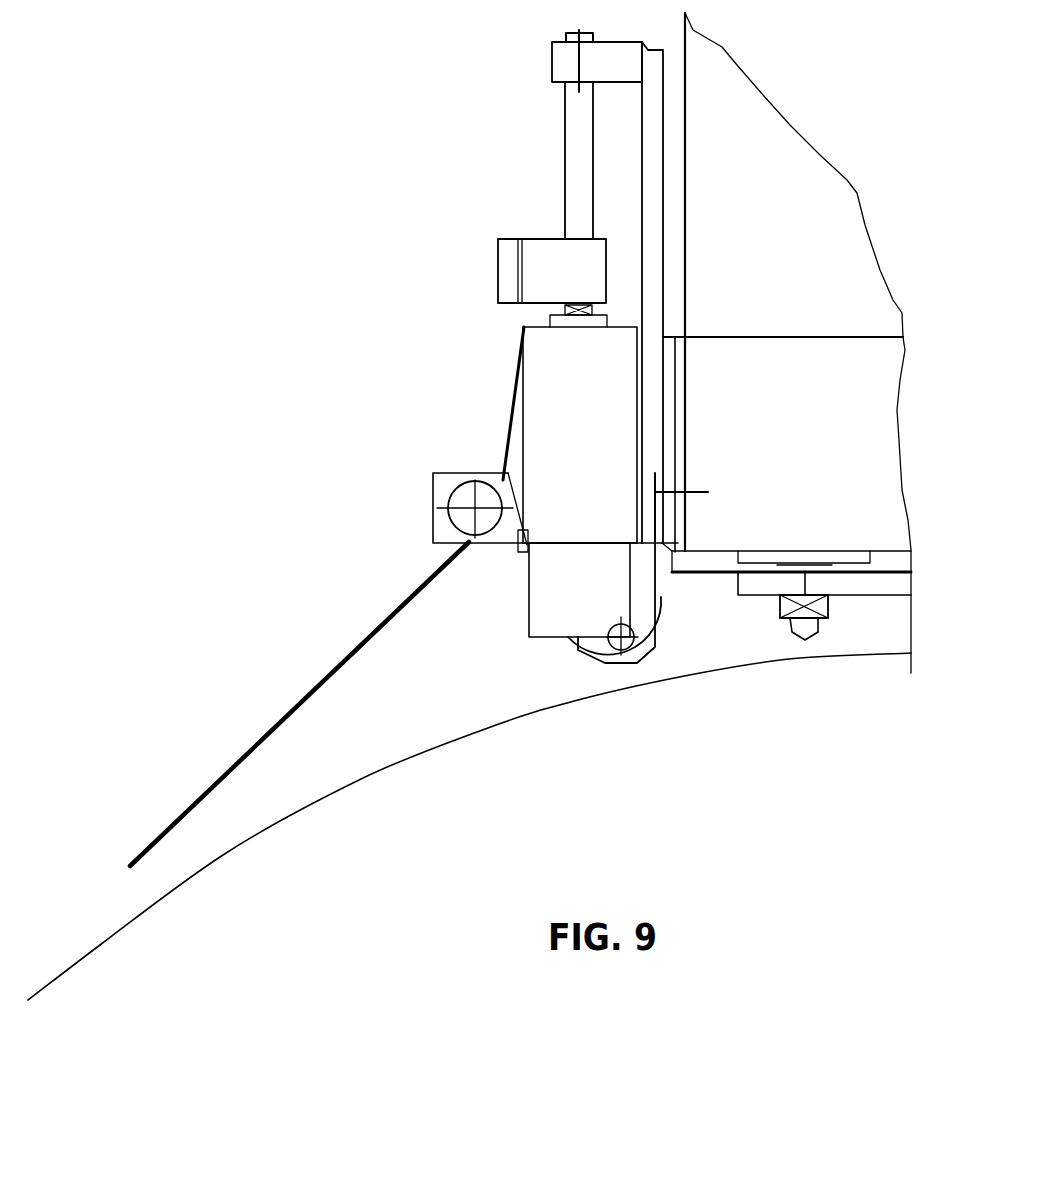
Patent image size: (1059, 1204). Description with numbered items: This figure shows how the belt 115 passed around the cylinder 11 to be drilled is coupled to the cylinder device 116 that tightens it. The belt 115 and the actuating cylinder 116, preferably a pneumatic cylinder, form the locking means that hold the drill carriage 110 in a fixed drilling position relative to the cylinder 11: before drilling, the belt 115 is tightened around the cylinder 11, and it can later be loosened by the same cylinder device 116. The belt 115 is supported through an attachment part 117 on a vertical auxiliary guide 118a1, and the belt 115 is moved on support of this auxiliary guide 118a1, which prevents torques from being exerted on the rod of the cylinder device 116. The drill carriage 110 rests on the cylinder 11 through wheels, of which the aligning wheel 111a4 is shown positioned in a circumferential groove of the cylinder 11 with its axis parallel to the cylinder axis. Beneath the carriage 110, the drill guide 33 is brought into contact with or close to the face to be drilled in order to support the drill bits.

The drill carriage 110 is at (792, 235).
The vertical auxiliary guide 118a1 is at (572, 130).
The attachment part 117 is at (582, 288).
The actuating cylinder 116 is at (538, 408).
The belt 115 is at (372, 632).
The aligning wheel 111a4 is at (582, 662).
The drill guide 33 is at (762, 592).
The cylinder 11 is at (487, 733).